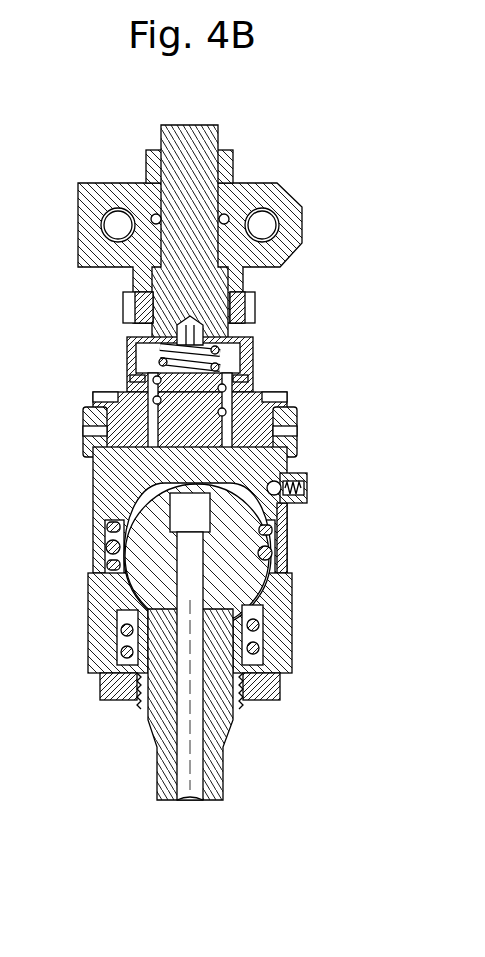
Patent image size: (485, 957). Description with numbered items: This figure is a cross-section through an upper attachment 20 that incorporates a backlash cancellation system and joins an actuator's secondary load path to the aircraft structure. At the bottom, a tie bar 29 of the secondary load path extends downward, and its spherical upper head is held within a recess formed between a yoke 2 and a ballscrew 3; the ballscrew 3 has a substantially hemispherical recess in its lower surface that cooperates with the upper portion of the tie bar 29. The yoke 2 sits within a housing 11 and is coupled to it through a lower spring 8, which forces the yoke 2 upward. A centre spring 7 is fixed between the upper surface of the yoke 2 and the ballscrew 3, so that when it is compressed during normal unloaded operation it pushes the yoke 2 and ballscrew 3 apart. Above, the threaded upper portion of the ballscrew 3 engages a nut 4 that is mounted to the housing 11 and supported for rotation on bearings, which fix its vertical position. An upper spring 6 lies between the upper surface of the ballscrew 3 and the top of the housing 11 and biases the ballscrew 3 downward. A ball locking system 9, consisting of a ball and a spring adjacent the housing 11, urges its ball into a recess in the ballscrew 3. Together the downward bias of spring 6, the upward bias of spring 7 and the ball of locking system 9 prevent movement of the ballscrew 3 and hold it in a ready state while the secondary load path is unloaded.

The upper attachment 20 is at (275, 313).
The upper spring 6 is at (128, 358).
The nut 4 is at (230, 412).
The ballscrew 3 is at (120, 485).
The centre spring 7 is at (110, 543).
The ball locking system 9 is at (280, 503).
The yoke 2 is at (120, 590).
The housing 11 is at (282, 590).
The lower spring 8 is at (118, 647).
The tie bar 29 is at (215, 765).